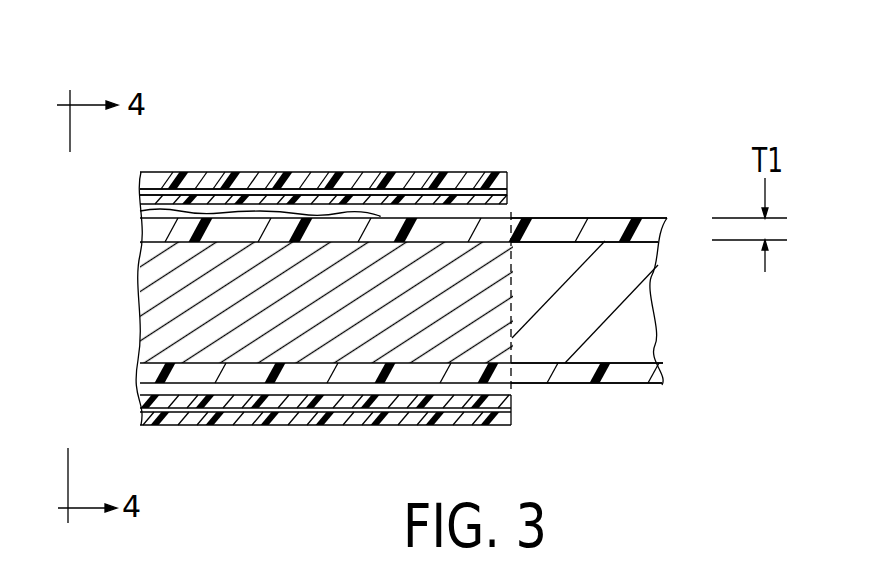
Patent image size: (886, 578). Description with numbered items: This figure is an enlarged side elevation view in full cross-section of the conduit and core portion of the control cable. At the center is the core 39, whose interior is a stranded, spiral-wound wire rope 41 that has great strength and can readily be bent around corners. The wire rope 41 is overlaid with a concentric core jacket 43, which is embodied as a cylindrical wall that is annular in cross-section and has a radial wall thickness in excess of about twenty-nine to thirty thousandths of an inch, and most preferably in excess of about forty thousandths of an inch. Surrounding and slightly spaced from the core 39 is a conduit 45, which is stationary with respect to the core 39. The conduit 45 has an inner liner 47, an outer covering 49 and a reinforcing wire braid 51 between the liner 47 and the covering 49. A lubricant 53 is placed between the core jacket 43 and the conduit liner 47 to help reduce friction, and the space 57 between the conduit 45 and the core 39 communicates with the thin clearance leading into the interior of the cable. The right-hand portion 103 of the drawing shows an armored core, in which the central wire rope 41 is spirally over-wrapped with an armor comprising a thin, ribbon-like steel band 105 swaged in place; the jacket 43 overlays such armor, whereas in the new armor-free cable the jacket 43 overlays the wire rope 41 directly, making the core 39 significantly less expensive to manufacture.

The core 39 is at (690, 310).
The wire rope 41 is at (142, 310).
The core jacket 43 is at (140, 378).
The conduit 45 is at (479, 142).
The inner liner 47 is at (513, 204).
The outer covering 49 is at (343, 176).
The reinforcing wire braid 51 is at (141, 184).
The lubricant 53 is at (141, 214).
The space 57 is at (500, 390).
The portion showing armor core 103 is at (653, 257).
The steel band 105 is at (640, 340).